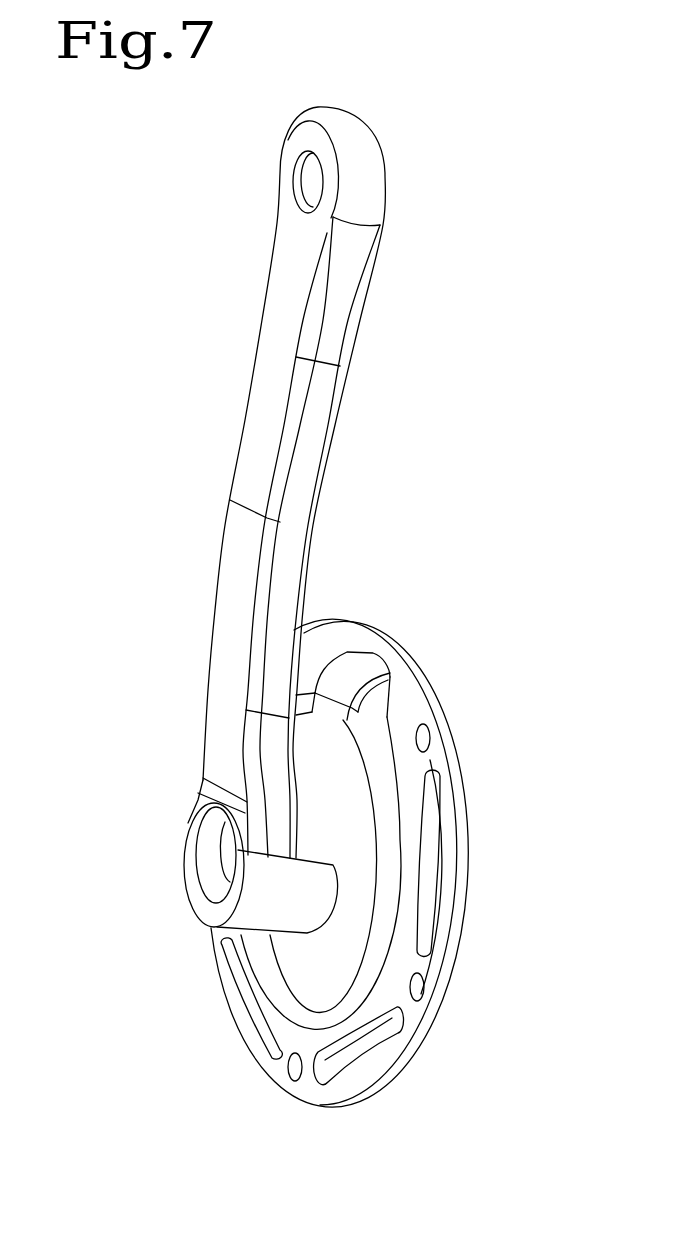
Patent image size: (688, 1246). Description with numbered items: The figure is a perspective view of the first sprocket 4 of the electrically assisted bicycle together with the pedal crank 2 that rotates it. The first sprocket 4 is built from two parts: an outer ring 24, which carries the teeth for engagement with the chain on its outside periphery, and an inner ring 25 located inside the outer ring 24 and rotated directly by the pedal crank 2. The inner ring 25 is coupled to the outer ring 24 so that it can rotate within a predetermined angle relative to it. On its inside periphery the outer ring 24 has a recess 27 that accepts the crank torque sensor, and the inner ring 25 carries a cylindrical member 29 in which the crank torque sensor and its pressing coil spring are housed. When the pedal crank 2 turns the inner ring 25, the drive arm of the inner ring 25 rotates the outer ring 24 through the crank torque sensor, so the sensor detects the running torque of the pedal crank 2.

The pedal crank 2 is at (264, 365).
The first sprocket 4 is at (485, 725).
The outer ring 24 is at (425, 968).
The inner ring 25 is at (278, 980).
The recess 27 is at (375, 655).
The cylindrical member 29 is at (347, 667).